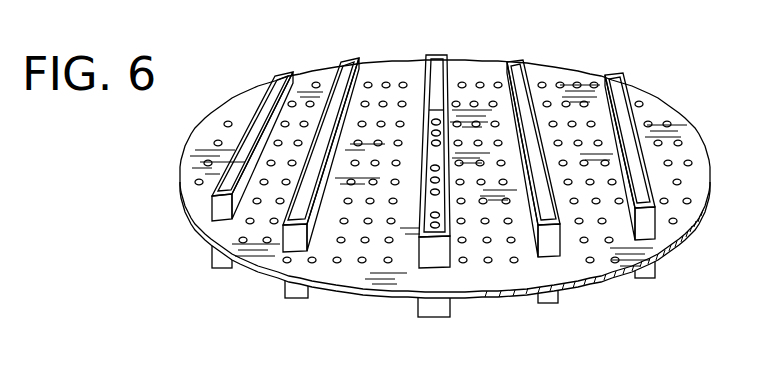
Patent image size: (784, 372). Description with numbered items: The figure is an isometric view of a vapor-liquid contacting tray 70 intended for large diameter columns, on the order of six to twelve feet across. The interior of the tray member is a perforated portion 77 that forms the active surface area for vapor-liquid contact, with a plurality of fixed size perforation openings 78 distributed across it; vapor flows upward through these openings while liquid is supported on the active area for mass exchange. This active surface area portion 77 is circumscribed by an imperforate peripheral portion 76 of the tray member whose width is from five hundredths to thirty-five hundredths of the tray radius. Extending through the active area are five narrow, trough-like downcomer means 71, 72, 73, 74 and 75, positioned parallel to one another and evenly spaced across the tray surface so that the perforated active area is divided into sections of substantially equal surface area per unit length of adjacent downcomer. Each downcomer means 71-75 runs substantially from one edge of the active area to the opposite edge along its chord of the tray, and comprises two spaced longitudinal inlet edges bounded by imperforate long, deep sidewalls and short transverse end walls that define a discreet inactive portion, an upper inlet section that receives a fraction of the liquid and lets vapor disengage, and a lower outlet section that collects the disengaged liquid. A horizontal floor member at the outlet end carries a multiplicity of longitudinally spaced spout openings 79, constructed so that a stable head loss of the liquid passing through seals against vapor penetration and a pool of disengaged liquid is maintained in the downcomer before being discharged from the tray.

The perforated support plate 70 is at (684, 117).
The downcomer means 71 is at (222, 261).
The downcomer means 72 is at (297, 295).
The downcomer means 73 is at (434, 308).
The downcomer means 74 is at (551, 303).
The downcomer means 75 is at (645, 276).
The imperforate peripheral portion 76 is at (698, 196).
The perforated portion 77 is at (559, 110).
The perforation opening 78 is at (463, 82).
The spout opening 79 is at (432, 120).